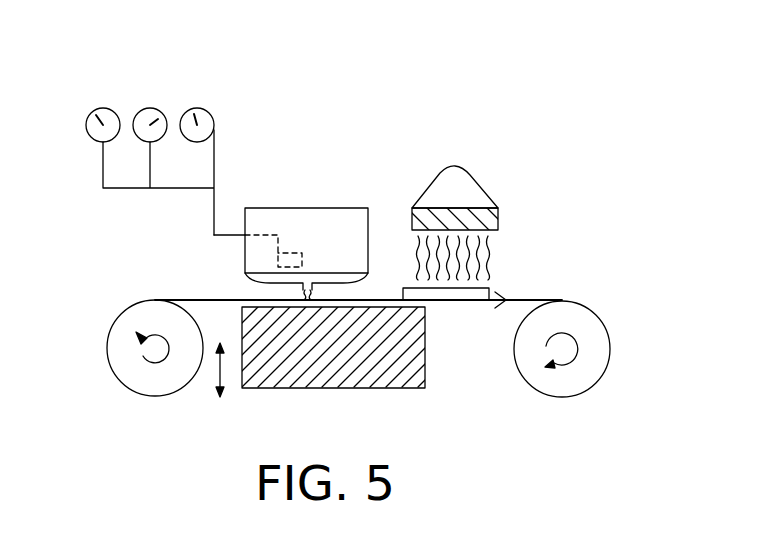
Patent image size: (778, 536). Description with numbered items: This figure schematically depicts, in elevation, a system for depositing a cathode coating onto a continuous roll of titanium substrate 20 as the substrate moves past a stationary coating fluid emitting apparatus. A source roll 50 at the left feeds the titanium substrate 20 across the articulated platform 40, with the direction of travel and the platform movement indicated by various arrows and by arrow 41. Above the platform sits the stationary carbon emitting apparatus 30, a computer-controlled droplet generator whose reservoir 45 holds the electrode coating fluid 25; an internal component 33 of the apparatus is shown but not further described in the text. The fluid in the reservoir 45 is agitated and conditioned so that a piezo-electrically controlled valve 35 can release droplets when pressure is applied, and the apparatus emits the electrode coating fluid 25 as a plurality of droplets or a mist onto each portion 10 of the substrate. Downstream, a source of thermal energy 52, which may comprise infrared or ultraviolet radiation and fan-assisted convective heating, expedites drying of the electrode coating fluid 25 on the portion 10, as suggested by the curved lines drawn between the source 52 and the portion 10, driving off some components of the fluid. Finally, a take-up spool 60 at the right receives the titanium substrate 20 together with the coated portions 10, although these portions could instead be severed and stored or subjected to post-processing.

The portion of titanium substrate 10 is at (468, 280).
The titanium substrate 20 is at (192, 298).
The electrode coating fluid 25 is at (325, 298).
The carbon emitting apparatus 30 is at (340, 202).
The internal component of applicator 33 is at (289, 232).
The piezo-electrically controlled valve 35 is at (197, 105).
The articulated platform 40 is at (297, 390).
The arrow 41 is at (212, 377).
The reservoir 45 is at (271, 203).
The supply roller 50 is at (100, 350).
The source of thermal energy 52 is at (487, 187).
The take-up spool 60 is at (615, 348).